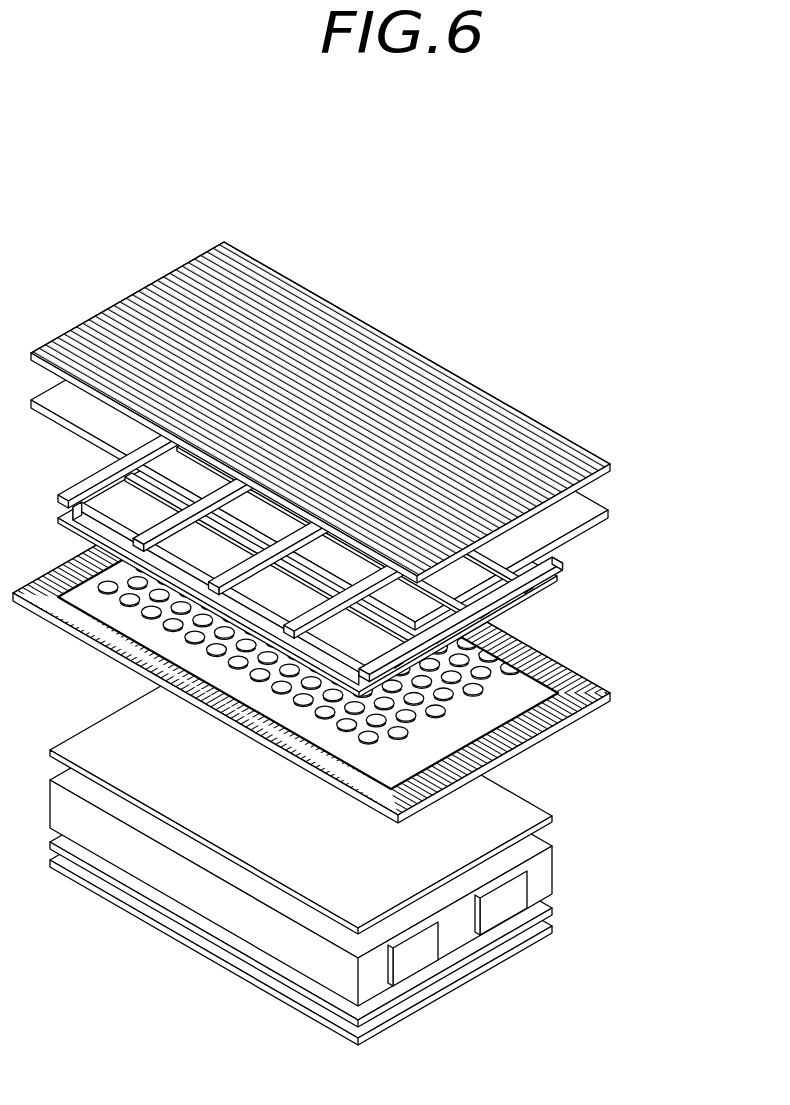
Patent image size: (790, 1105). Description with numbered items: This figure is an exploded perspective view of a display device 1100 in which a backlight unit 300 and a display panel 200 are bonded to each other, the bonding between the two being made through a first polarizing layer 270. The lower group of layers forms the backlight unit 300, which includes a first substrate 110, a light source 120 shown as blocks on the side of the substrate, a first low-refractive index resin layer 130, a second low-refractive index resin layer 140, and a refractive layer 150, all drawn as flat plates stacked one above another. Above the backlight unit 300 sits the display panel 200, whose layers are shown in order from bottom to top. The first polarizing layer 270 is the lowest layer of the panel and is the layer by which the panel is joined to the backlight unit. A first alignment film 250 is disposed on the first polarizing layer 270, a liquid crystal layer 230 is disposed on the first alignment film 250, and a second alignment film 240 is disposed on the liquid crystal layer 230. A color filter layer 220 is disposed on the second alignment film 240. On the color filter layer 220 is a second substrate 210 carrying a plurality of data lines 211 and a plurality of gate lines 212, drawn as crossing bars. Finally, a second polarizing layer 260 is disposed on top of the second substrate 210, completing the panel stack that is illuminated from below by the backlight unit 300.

The display device 1100 is at (61, 120).
The display panel 200 is at (703, 383).
The second polarizing layer 260 is at (593, 464).
The second substrate 210 is at (590, 508).
The data lines 211 is at (553, 548).
The gate lines 212 is at (540, 577).
The second alignment film 240 is at (535, 580).
The color filter layer 220 is at (463, 625).
The liquid crystal layer 230 is at (520, 661).
The first alignment film 250 is at (517, 676).
The first polarizing layer 270 is at (550, 707).
The backlight unit 300 is at (661, 775).
The first low-refractive index resin layer 130 is at (494, 806).
The first substrate 110 is at (545, 857).
The light source 120 is at (518, 890).
The second low-refractive index resin layer 140 is at (543, 913).
The refractive layer 150 is at (543, 938).